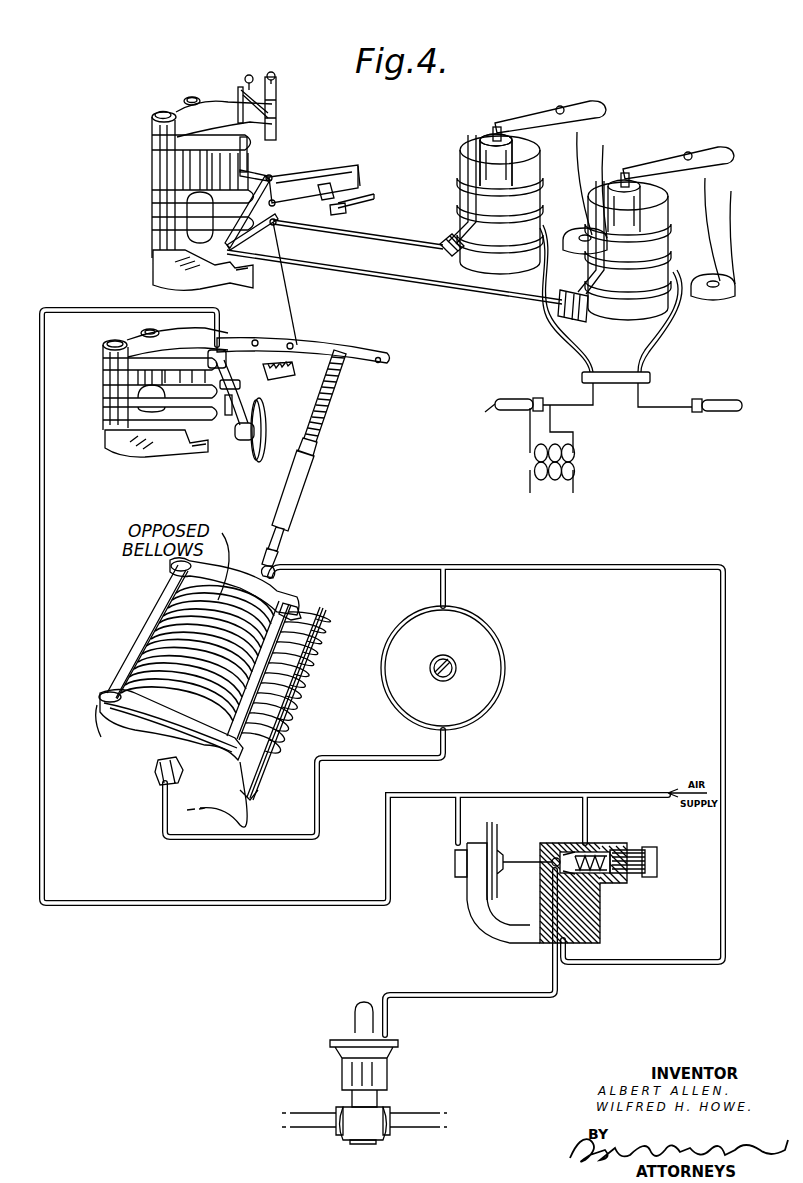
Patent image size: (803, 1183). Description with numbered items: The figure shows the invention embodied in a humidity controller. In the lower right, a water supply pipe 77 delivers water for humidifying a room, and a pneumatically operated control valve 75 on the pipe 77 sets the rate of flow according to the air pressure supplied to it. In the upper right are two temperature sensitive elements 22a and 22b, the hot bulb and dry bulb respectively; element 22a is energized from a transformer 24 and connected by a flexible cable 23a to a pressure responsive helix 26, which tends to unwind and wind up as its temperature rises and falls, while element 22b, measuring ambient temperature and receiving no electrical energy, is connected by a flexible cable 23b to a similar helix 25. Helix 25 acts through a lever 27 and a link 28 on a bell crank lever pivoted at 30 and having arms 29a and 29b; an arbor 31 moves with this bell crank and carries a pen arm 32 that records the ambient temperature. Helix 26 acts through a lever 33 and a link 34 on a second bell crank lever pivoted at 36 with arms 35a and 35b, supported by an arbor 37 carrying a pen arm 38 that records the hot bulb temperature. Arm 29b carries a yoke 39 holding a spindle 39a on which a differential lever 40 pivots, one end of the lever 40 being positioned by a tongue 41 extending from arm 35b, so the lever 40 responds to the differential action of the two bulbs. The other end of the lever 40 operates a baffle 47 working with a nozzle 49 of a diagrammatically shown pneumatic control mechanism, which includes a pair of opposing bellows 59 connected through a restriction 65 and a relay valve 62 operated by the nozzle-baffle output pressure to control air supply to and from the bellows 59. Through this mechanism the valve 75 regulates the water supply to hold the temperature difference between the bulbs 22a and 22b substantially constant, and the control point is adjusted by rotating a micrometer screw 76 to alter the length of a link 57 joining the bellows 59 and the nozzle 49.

The temperature sensitive element 22a is at (512, 399).
The temperature sensitive element 22b is at (722, 400).
The flexible cable 23a is at (581, 347).
The flexible cable 23b is at (668, 348).
The transformer 24 is at (578, 464).
The pressure responsive helix 25 is at (656, 233).
The pressure responsive helix 26 is at (541, 172).
The lever 27 is at (600, 300).
The link 28 is at (472, 298).
The bell crank arm 29a is at (240, 245).
The bell crank arm 29b is at (300, 202).
The pivot 30 is at (275, 201).
The arbor 31 is at (241, 152).
The pen arm 32 is at (277, 106).
The lever 33 is at (480, 200).
The link 34 is at (415, 240).
The bell crank arm 35a is at (277, 226).
The bell crank arm 35b is at (328, 168).
The pivot 36 is at (273, 176).
The arbor 37 is at (250, 160).
The pen arm 38 is at (278, 129).
The yoke 39 is at (329, 187).
The spindle 39a is at (340, 214).
The differential lever 40 is at (370, 196).
The tongue 41 is at (361, 177).
The baffle 47 is at (171, 392).
The nozzle 49 is at (262, 408).
The link 57 is at (319, 467).
The opposing bellows 59 is at (298, 690).
The relay valve 62 is at (604, 843).
The restriction 65 is at (500, 648).
The pneumatically operated control valve 75 is at (390, 1040).
The micrometer screw 76 is at (318, 372).
The water supply pipe 77 is at (400, 1113).